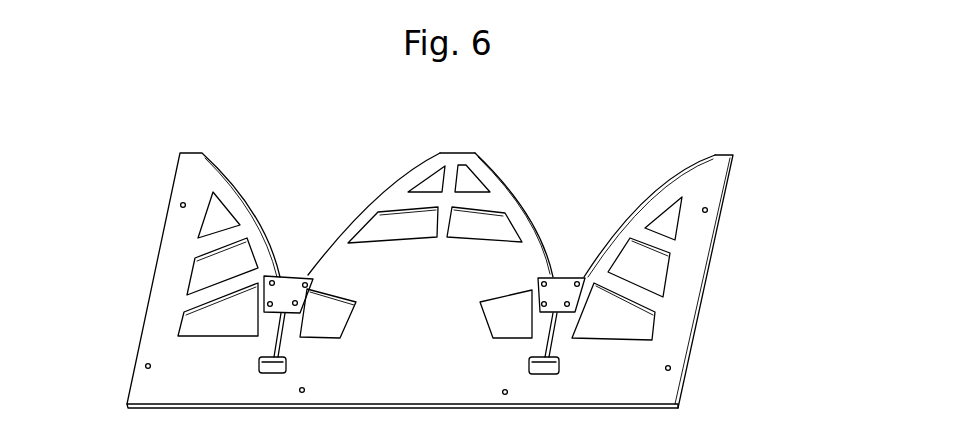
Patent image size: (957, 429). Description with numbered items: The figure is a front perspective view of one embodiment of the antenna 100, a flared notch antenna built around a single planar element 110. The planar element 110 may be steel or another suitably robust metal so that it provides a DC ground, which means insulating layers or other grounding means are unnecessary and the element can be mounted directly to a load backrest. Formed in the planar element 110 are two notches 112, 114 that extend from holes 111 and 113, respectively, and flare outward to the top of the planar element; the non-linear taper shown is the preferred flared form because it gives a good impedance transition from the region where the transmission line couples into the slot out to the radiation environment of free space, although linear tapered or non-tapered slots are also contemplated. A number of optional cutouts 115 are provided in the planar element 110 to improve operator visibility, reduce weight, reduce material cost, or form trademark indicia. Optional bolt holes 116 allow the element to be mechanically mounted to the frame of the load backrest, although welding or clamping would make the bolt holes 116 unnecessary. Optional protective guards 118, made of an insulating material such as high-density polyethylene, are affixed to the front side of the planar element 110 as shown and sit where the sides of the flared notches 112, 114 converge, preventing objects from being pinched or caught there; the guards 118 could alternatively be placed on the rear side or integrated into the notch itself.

The antenna 100 is at (533, 150).
The planar element 110 is at (147, 307).
The hole 111 is at (530, 368).
The notch 112 is at (568, 243).
The hole 113 is at (260, 367).
The notch 114 is at (298, 243).
The cutout 115 is at (674, 227).
The bolt hole 116 is at (708, 209).
The protective guard 118 is at (540, 280).